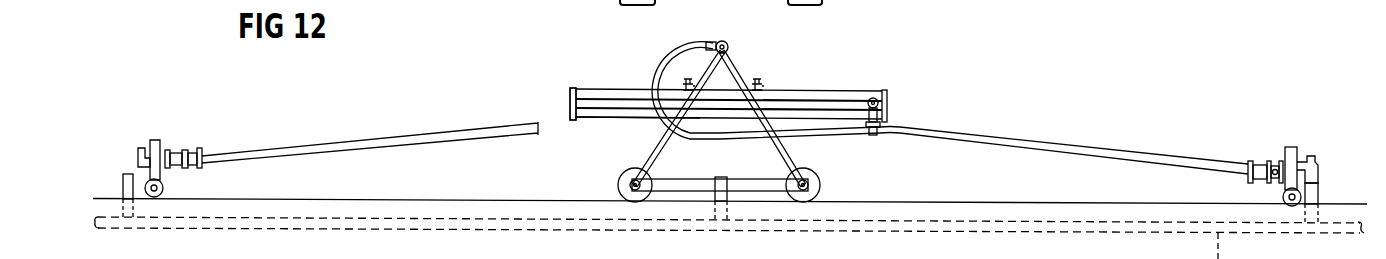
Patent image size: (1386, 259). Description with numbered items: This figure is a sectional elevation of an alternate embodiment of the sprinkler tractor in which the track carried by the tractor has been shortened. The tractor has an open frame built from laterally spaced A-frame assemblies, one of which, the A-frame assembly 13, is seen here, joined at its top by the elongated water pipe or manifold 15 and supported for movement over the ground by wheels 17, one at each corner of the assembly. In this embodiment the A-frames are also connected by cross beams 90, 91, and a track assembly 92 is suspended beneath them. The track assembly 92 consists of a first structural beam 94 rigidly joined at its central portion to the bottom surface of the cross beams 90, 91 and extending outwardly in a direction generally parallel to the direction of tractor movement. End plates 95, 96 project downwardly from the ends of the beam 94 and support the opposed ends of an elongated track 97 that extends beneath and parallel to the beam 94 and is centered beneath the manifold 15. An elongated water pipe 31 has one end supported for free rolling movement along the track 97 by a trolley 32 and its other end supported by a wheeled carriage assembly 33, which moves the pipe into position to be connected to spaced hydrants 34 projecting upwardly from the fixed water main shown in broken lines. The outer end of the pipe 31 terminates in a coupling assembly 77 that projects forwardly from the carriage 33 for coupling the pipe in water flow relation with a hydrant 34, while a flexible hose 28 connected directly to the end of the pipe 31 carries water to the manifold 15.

The A-frame assembly 13 is at (806, 159).
The manifold 15 is at (729, 44).
The wheel 17 is at (818, 173).
The flexible hose 28 is at (656, 63).
The water pipe 31 is at (358, 140).
The trolley 32 is at (885, 112).
The wheeled carriage assembly 33 is at (165, 142).
The hydrant 34 is at (122, 181).
The coupling assembly 77 is at (128, 152).
The cross beam 90 is at (757, 78).
The cross beam 91 is at (689, 77).
The track assembly 92 is at (864, 86).
The structural beam 94 is at (830, 90).
The end plate 95 is at (888, 101).
The end plate 96 is at (569, 101).
The track 97 is at (611, 118).